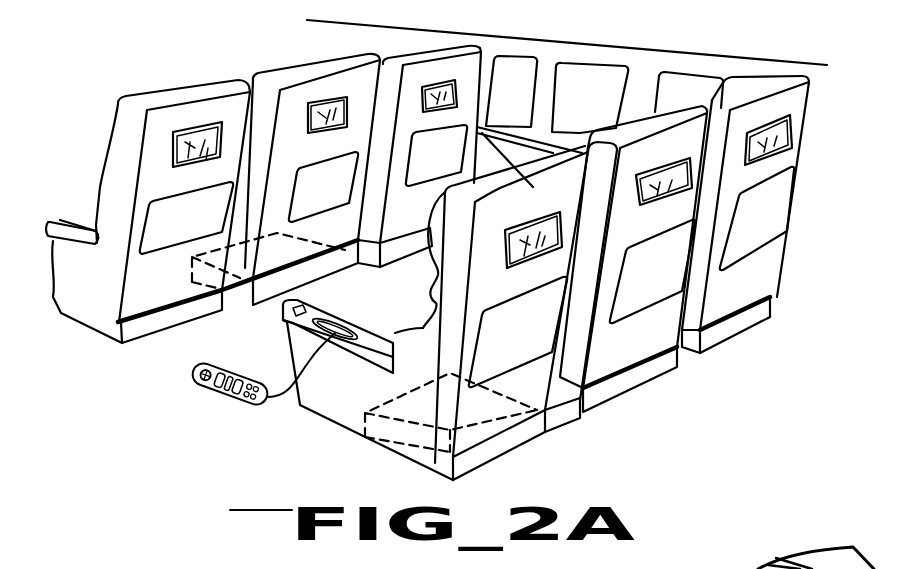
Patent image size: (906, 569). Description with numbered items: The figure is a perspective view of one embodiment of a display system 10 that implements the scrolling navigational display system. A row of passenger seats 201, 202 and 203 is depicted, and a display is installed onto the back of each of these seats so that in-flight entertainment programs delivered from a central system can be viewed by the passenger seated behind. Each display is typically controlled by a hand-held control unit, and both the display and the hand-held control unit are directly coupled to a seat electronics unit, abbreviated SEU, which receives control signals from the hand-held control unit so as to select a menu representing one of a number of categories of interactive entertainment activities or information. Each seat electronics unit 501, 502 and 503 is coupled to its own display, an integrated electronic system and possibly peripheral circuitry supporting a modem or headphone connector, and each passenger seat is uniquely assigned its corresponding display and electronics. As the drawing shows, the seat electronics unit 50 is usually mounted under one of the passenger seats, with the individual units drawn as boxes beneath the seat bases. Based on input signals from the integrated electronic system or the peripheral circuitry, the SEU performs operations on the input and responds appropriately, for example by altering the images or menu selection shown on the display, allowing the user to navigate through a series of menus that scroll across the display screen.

The display system 10 is at (400, 25).
The passenger seat 201 is at (150, 97).
The passenger seat 202 is at (297, 75).
The passenger seat 203 is at (457, 63).
The seat electronics unit 50 is at (523, 437).
The seat electronics unit 501 is at (170, 313).
The seat electronics unit 502 is at (269, 293).
The seat electronics unit 503 is at (365, 257).
The seat electronics unit SEU is at (192, 307).